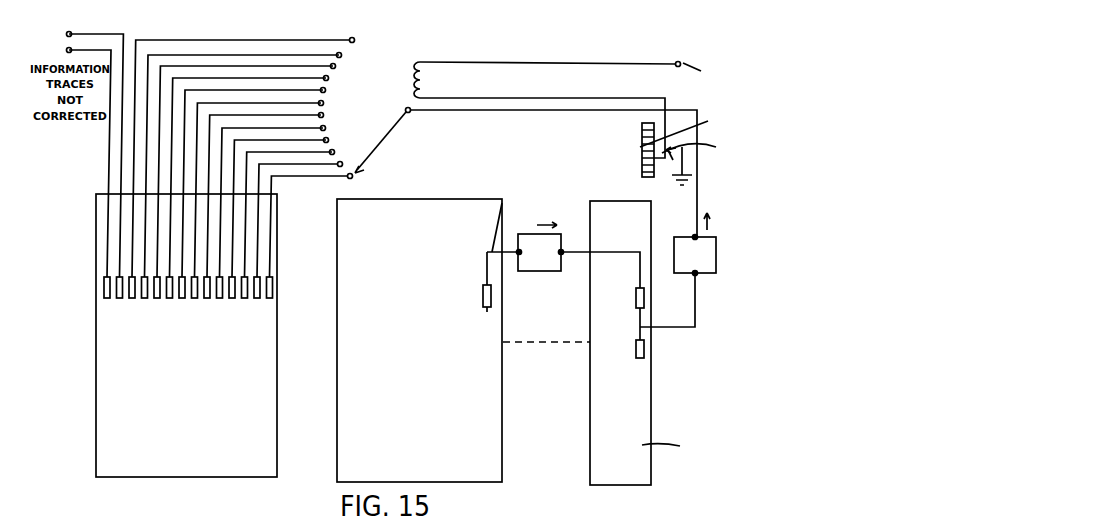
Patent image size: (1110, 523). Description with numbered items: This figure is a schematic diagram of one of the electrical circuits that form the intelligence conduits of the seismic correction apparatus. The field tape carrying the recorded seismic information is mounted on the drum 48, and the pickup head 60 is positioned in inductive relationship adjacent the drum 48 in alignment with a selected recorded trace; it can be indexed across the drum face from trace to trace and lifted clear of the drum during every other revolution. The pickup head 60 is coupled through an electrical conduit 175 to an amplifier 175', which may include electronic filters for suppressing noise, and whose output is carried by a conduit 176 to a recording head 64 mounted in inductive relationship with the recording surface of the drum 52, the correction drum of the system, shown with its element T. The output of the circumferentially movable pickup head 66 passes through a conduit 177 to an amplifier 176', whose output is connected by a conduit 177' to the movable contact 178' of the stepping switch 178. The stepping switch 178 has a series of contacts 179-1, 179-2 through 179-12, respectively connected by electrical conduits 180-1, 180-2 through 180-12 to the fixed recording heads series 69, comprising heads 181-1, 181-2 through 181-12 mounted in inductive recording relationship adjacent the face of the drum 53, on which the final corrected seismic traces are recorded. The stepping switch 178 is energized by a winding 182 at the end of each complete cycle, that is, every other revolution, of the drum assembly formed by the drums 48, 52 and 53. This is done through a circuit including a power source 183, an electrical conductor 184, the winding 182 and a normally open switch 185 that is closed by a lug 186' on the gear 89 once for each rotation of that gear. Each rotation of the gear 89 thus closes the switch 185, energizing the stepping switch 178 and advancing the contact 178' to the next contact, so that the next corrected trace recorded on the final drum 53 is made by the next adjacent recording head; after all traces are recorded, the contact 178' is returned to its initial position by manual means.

The drum 53 is at (108, 402).
The electrical conduit 180-12 is at (230, 30).
The contact 179-12 is at (352, 37).
The electrical conduit 180-2 is at (282, 166).
The contact 179-2 is at (343, 160).
The electrical conduit 180-1 is at (292, 179).
The contact 179-1 is at (353, 179).
The fixed recording heads series 69 is at (213, 316).
The recording head 181-12 is at (133, 299).
The recording head 181-2 is at (257, 299).
The recording head 181-1 is at (272, 299).
The stepping switch 178 is at (435, 94).
The movable contact 178' is at (394, 141).
The winding 182 is at (442, 80).
The electrical conductor 184 is at (545, 63).
The power source 183 is at (701, 71).
The conduit 177' is at (553, 173).
The gear 89 is at (640, 148).
The lug 186' is at (694, 138).
The normally open switch 185 is at (716, 147).
The drum 48 is at (418, 205).
The drum 52 is at (610, 210).
The transistor element T is at (667, 446).
The electrical conduit 175 is at (511, 209).
The pickup head 60 is at (486, 309).
The amplifier 175' is at (545, 240).
The conduit 176 is at (600, 246).
The recording head 64 is at (637, 310).
The circumferentially movable pickup head 66 is at (636, 360).
The conduit 177 is at (684, 314).
The amplifier 176' is at (728, 255).